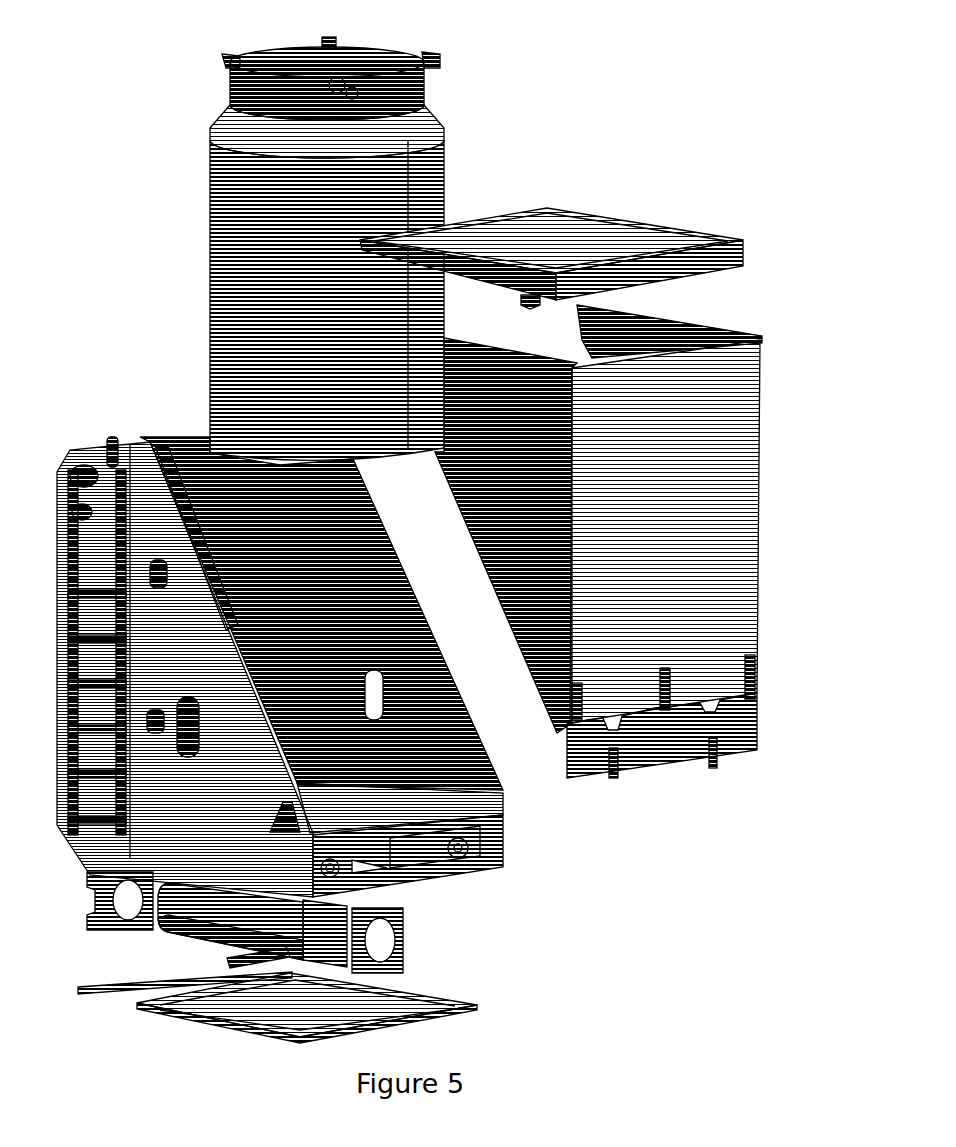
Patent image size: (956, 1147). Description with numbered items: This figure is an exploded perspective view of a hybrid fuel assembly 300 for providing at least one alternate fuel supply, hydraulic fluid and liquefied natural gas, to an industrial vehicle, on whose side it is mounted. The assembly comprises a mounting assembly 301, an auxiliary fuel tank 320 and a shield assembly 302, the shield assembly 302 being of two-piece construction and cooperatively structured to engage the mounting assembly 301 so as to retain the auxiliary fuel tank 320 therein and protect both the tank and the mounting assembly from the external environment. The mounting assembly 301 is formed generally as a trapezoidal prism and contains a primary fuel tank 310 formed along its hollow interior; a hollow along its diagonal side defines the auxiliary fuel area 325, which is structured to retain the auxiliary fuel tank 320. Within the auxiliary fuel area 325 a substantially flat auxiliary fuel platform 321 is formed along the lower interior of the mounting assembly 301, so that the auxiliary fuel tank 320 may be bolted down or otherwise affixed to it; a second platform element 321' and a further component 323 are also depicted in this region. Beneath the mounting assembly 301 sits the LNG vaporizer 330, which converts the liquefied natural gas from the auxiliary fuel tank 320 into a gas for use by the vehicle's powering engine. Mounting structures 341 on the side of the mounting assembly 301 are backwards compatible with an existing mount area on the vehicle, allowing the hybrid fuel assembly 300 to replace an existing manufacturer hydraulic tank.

The hybrid fuel assembly 300 is at (708, 114).
The mounting assembly 301 is at (537, 898).
The shield assembly 302 is at (776, 307).
The primary fuel tank 310 is at (138, 443).
The auxiliary fuel tank 320 is at (250, 68).
The auxiliary fuel platform 321 is at (454, 840).
The rail 321' is at (195, 503).
The bracket 323 is at (72, 537).
The auxiliary fuel area 325 is at (400, 635).
The LNG vaporizer 330 is at (170, 938).
The mounting structures 341 is at (72, 458).